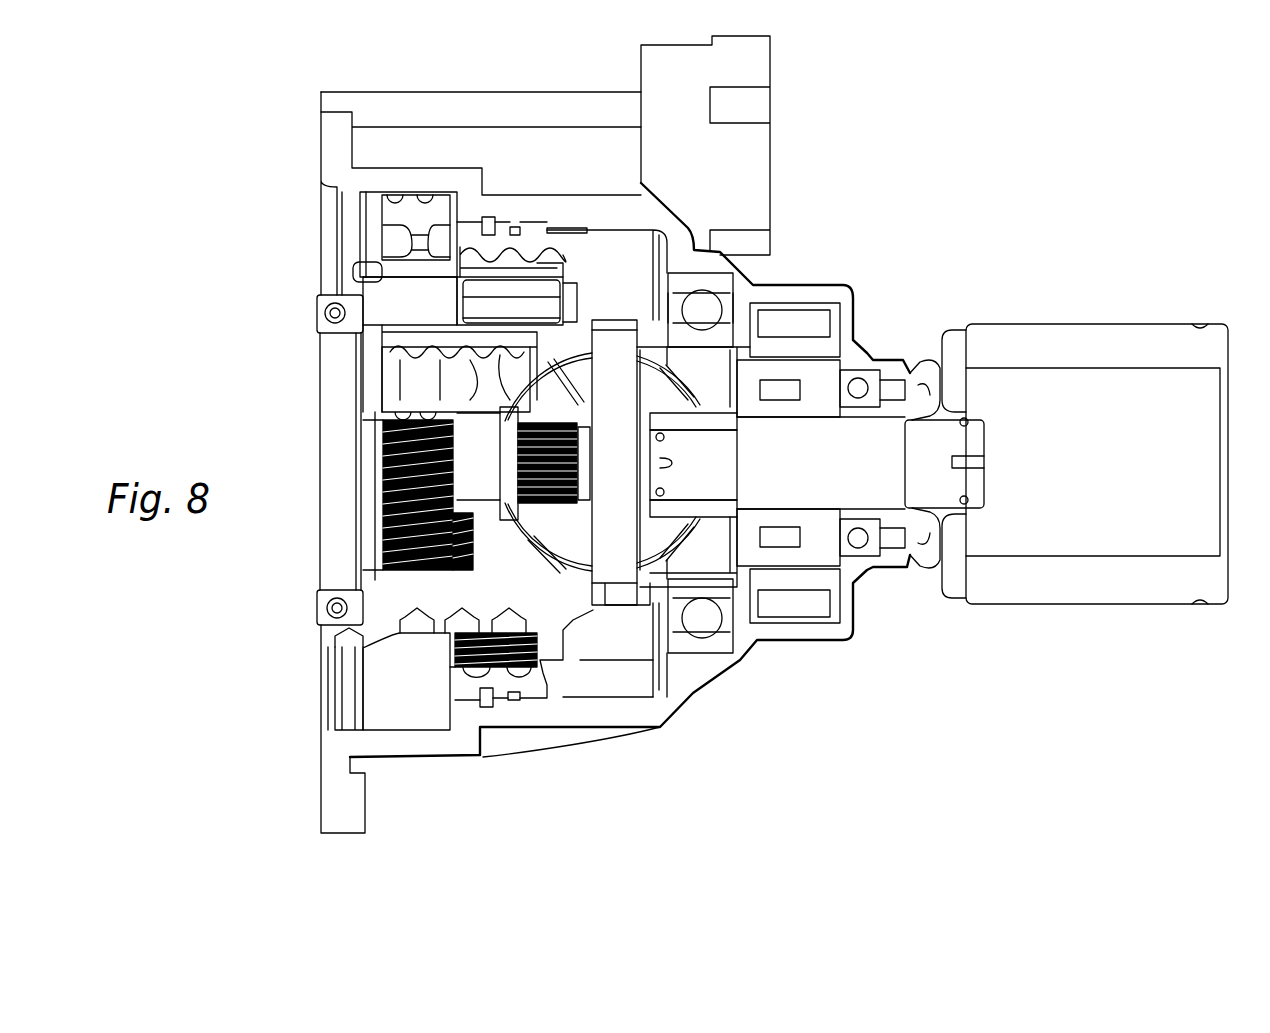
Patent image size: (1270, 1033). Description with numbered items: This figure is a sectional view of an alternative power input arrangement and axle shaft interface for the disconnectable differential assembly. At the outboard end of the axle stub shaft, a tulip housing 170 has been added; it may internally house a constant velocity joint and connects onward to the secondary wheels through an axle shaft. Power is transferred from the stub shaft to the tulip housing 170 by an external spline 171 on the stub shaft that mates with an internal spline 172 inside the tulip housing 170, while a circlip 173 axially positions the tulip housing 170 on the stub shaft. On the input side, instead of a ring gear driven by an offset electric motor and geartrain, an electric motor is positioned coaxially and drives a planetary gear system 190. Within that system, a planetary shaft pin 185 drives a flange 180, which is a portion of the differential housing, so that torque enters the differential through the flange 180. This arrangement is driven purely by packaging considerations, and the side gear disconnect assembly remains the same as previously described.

The tulip housing 170 is at (1092, 340).
The external spline 171 is at (920, 503).
The internal spline 172 is at (927, 416).
The circlip 173 is at (978, 488).
The flange 180 is at (556, 270).
The planetary shaft pin 185 is at (507, 300).
The planetary gear system 190 is at (457, 318).